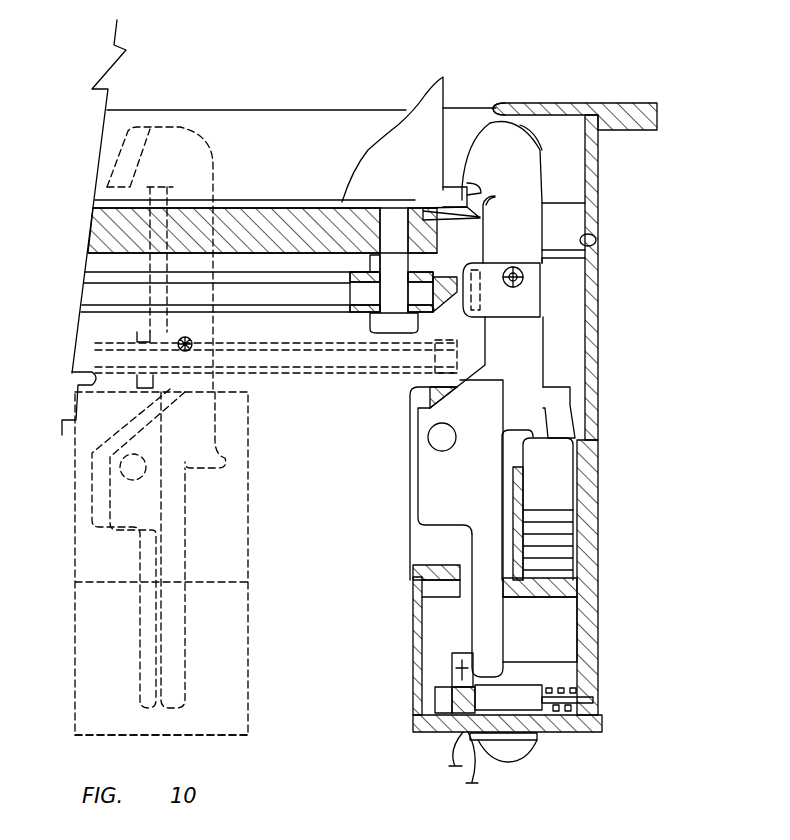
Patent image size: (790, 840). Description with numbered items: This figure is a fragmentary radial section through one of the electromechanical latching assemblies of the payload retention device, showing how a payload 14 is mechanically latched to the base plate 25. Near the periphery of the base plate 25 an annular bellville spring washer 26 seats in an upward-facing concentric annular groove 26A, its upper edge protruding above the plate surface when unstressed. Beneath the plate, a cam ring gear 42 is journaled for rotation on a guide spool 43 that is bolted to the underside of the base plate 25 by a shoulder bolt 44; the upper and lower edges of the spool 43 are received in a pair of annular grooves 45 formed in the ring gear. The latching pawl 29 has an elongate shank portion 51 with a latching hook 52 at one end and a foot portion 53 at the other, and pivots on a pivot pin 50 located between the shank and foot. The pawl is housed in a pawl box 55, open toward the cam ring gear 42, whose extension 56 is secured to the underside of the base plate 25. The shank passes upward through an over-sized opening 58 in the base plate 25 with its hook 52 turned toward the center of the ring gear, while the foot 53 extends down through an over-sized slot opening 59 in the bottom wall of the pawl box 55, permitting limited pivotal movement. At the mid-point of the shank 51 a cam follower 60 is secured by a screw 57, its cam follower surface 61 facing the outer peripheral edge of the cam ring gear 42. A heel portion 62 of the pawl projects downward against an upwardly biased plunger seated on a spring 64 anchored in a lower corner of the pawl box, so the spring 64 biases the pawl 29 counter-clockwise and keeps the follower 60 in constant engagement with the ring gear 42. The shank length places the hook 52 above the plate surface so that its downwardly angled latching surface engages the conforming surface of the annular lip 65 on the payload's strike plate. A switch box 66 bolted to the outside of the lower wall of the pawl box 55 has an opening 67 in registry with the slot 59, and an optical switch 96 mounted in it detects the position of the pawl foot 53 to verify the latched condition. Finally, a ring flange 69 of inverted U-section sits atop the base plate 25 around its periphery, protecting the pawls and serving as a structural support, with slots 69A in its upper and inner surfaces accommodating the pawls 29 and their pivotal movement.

The payload 14 is at (432, 109).
The base plate 25 is at (286, 199).
The bellville spring washer 26 is at (463, 180).
The annular groove 26A is at (486, 206).
The latching pawl 29 is at (535, 137).
The cam ring gear 42 is at (117, 318).
The guide spool 43 is at (360, 316).
The shoulder bolt 44 is at (395, 332).
The annular grooves 45 is at (462, 212).
The pivot pin 50 is at (130, 480).
The shank portion 51 is at (533, 226).
The latching hook 52 is at (120, 195).
The foot portion 53 is at (507, 623).
The pawl box 55 is at (254, 517).
The extension 56 is at (598, 353).
The screw 57 is at (517, 288).
The over-sized opening 58 is at (596, 248).
The slot opening 59 is at (460, 563).
The cam follower 60 is at (217, 377).
The cam follower surface 61 is at (445, 313).
The heel portion 62 is at (576, 436).
The spring 64 is at (598, 519).
The annular lip 65 is at (447, 182).
The switch box 66 is at (254, 672).
The opening 67 is at (457, 597).
The ring flange 69 is at (662, 127).
The slots 69A is at (522, 100).
The optical switch 96 is at (443, 683).